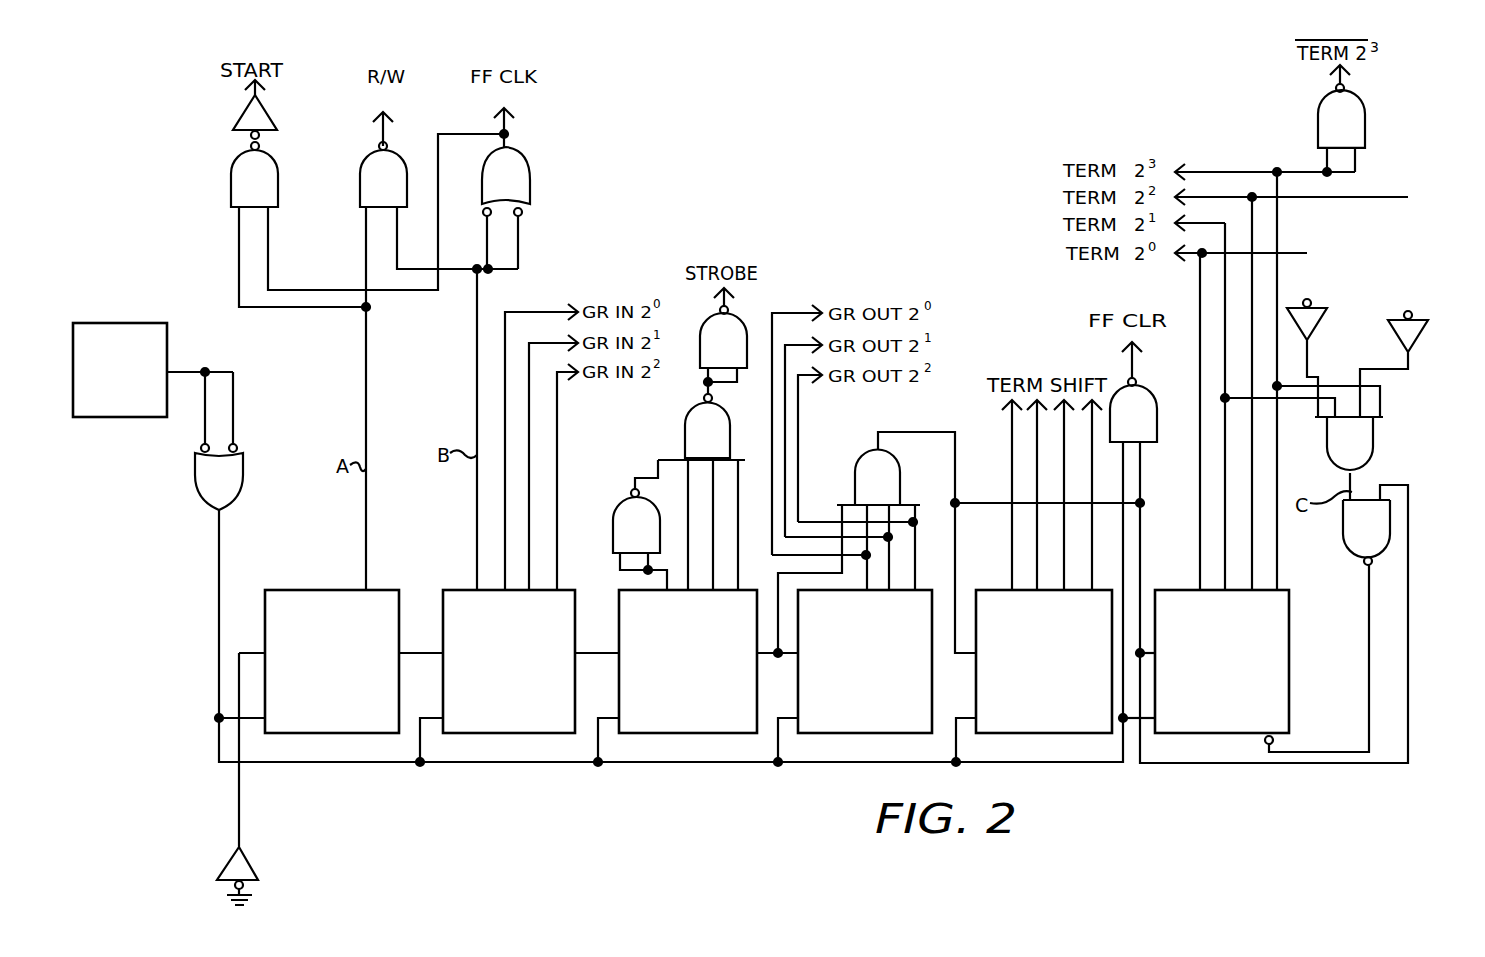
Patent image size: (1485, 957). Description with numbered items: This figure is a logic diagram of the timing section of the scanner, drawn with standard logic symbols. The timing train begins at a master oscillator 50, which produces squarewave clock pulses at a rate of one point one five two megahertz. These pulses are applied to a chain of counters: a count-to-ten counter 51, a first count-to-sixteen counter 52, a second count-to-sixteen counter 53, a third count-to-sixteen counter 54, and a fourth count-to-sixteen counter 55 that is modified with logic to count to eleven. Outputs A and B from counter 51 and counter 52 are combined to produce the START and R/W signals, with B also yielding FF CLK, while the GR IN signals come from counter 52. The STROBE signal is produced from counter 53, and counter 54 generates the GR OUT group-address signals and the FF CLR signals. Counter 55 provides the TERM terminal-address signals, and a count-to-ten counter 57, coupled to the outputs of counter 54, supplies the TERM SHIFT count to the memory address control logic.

The master oscillator 50 is at (148, 417).
The count-to-10 counter 51 is at (302, 590).
The first count-to-16 counter 52 is at (458, 590).
The second count-to-16 counter 53 is at (617, 592).
The third count-to-16 counter 54 is at (883, 735).
The count-to-10 counter 57 is at (990, 590).
The fourth count-to-16 counter 55 is at (1180, 590).